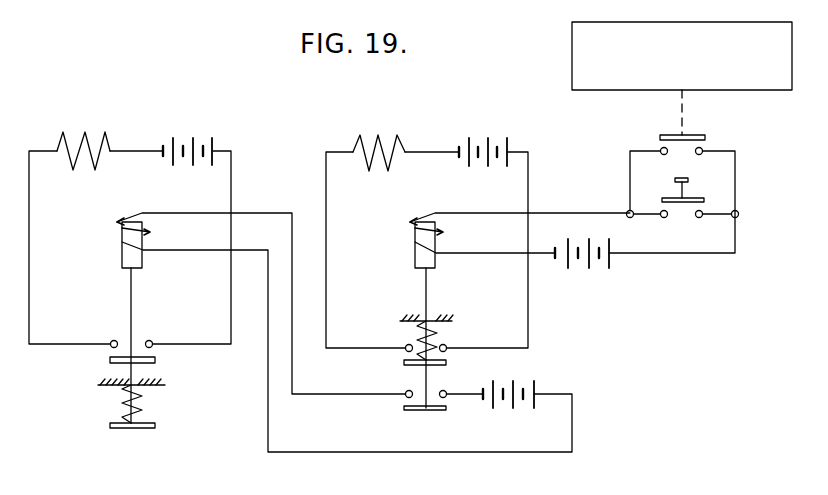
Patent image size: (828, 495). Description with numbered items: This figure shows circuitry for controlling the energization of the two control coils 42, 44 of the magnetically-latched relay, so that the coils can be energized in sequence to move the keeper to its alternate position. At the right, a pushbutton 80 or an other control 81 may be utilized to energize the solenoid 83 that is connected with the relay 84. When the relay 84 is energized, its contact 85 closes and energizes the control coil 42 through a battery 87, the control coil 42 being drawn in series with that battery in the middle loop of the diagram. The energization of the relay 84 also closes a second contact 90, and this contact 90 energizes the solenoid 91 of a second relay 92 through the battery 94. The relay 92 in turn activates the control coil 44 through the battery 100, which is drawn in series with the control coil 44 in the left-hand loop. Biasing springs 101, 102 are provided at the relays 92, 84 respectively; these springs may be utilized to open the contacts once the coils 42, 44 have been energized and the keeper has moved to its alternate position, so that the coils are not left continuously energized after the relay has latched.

The control coil 44 is at (88, 138).
The battery 100 is at (193, 138).
The solenoid 91 is at (120, 242).
The relay 92 is at (326, 332).
The biasing spring 101 is at (123, 398).
The control coil 42 is at (378, 140).
The solenoid 83 is at (415, 245).
The relay 84 is at (502, 310).
The biasing spring 102 is at (435, 333).
The contact 85 is at (440, 365).
The contact 90 is at (432, 411).
The battery 94 is at (535, 385).
The other control 81 is at (770, 90).
The pushbutton 80 is at (686, 204).
The battery 87 is at (609, 262).